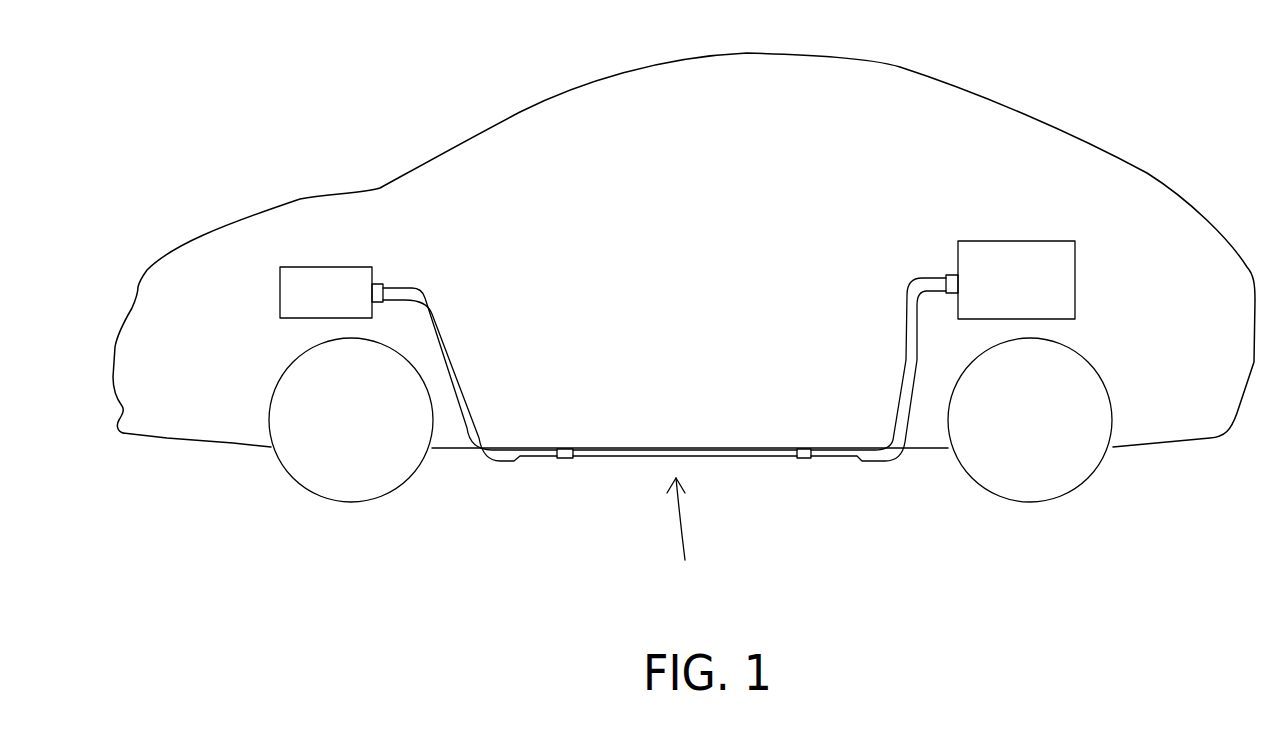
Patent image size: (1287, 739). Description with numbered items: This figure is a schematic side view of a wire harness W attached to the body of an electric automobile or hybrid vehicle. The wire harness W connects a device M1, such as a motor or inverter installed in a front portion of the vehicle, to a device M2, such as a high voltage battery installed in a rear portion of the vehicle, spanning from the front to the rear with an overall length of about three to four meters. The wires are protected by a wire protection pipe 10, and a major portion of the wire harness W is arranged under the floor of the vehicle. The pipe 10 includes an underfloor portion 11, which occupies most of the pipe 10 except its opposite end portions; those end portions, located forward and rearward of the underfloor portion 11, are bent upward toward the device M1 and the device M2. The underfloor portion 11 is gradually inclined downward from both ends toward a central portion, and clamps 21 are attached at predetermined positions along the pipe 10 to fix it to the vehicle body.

The device M1 is at (319, 284).
The device M2 is at (1022, 270).
The pipe 10 is at (664, 426).
The underfloor portion 11 is at (740, 456).
The clamp 21 is at (567, 460).
The wire harness W is at (680, 539).